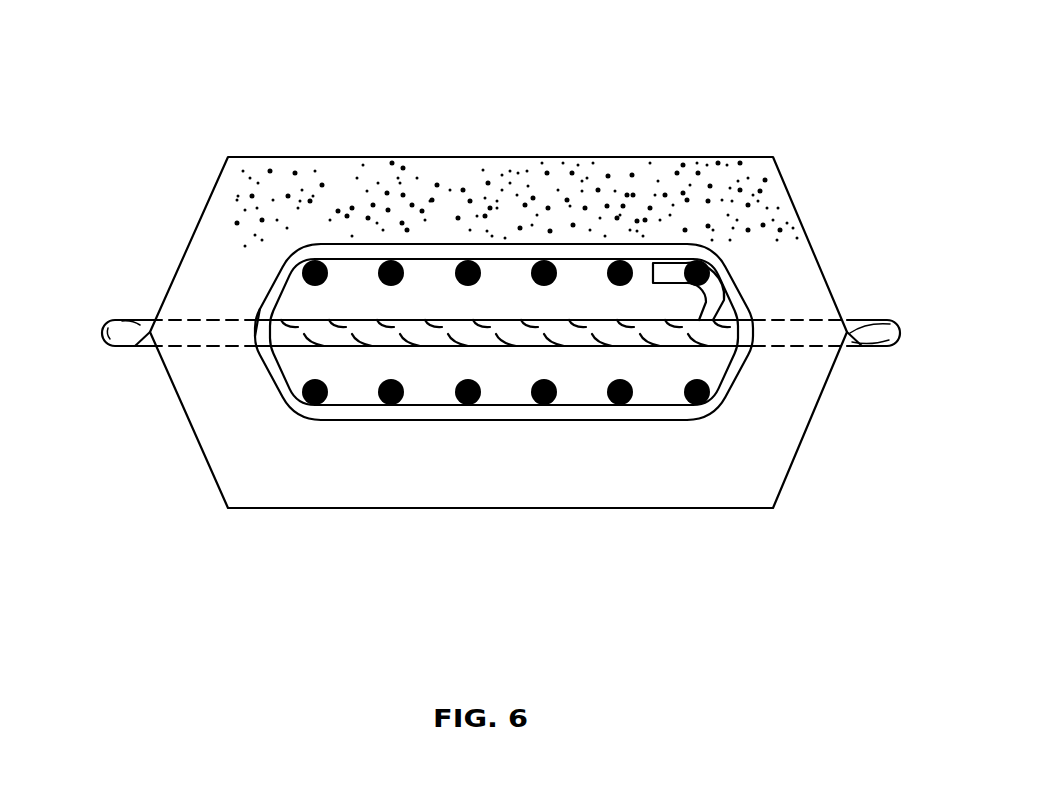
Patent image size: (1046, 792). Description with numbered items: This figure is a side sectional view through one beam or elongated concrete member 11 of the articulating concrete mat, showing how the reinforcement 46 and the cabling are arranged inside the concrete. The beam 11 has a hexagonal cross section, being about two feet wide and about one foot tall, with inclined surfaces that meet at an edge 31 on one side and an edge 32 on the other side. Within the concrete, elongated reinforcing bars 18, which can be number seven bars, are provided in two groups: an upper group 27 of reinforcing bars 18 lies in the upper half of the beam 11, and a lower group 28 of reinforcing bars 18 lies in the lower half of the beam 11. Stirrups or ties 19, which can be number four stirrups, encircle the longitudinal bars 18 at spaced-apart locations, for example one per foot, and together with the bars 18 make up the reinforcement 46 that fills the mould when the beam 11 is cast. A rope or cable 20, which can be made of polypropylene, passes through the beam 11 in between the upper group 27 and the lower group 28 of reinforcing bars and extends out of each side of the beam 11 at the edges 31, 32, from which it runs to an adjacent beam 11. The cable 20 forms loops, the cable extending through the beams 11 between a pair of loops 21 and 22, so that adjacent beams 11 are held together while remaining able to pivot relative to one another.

The beam or elongated concrete member 11 is at (183, 240).
The reinforcing bars 18 is at (544, 261).
The stirrups or ties 19 is at (740, 368).
The rope or cable 20 is at (870, 348).
The loop 21 is at (112, 322).
The loop 22 is at (882, 317).
The upper group of reinforcing bars 27 is at (740, 247).
The lower group of reinforcing bars 28 is at (262, 383).
The edge 31 is at (855, 333).
The edge 32 is at (152, 331).
The reinforcement 46 is at (338, 422).